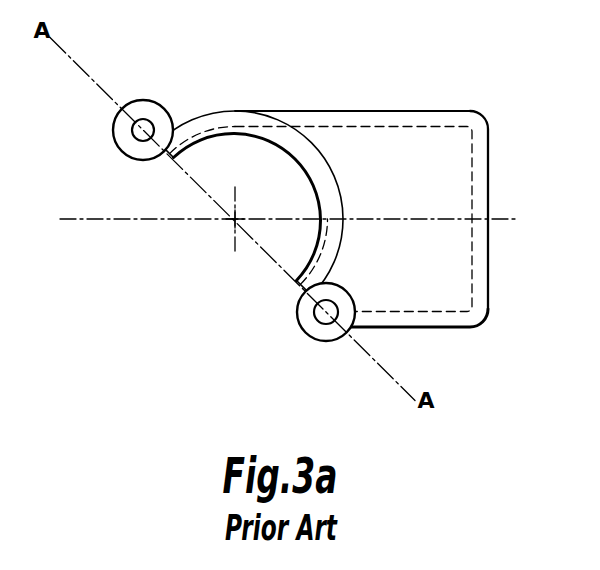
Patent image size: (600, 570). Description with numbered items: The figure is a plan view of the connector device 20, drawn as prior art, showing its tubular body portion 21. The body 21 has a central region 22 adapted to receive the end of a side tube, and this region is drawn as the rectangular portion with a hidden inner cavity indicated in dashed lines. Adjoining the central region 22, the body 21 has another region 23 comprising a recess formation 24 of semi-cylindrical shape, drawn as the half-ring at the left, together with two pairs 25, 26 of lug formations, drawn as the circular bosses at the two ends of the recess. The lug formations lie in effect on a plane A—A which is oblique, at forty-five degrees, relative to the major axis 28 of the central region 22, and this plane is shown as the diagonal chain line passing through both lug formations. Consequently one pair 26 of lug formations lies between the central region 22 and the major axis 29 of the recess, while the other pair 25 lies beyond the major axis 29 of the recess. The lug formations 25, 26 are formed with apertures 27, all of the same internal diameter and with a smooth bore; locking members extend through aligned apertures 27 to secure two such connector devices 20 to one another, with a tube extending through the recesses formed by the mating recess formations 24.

The connector device 20 is at (373, 109).
The tubular body portion 21 is at (456, 112).
The central region 22 is at (480, 277).
The another region 23 is at (205, 122).
The recess formation 24 is at (252, 184).
The pair of lug formations 25 is at (127, 143).
The pair of lug formations 26 is at (313, 325).
The apertures 27 is at (137, 128).
The major axis 28 is at (508, 212).
The major axis of the recess 29 is at (228, 224).